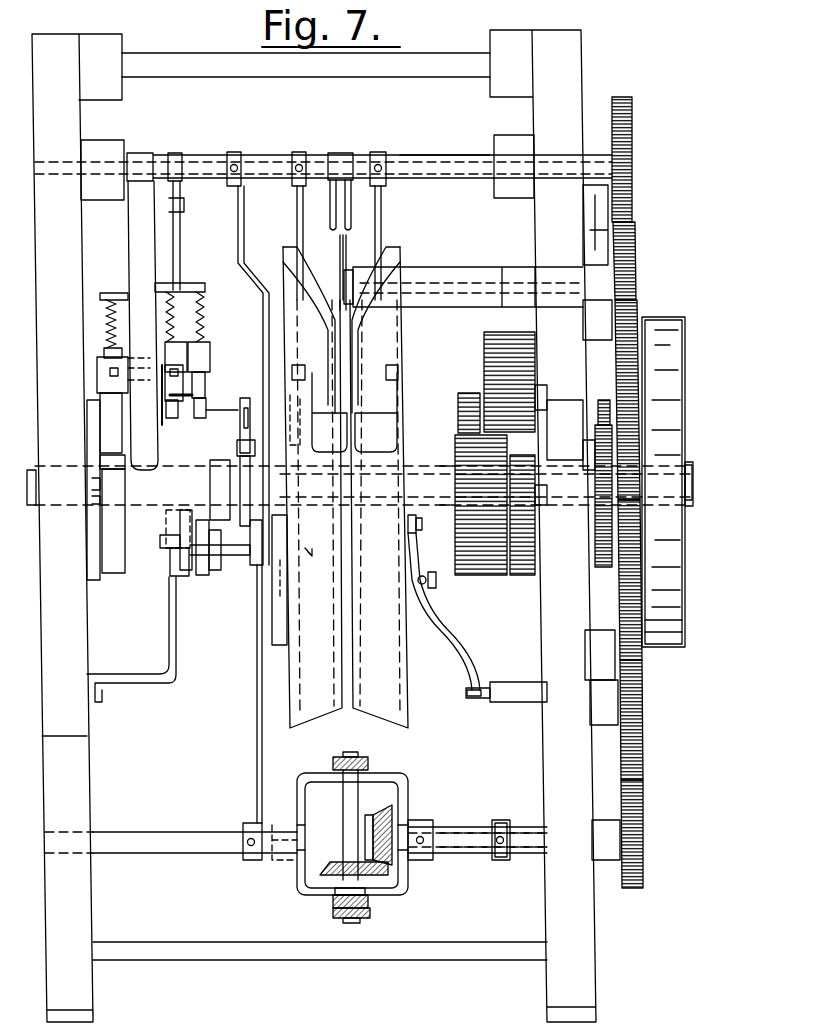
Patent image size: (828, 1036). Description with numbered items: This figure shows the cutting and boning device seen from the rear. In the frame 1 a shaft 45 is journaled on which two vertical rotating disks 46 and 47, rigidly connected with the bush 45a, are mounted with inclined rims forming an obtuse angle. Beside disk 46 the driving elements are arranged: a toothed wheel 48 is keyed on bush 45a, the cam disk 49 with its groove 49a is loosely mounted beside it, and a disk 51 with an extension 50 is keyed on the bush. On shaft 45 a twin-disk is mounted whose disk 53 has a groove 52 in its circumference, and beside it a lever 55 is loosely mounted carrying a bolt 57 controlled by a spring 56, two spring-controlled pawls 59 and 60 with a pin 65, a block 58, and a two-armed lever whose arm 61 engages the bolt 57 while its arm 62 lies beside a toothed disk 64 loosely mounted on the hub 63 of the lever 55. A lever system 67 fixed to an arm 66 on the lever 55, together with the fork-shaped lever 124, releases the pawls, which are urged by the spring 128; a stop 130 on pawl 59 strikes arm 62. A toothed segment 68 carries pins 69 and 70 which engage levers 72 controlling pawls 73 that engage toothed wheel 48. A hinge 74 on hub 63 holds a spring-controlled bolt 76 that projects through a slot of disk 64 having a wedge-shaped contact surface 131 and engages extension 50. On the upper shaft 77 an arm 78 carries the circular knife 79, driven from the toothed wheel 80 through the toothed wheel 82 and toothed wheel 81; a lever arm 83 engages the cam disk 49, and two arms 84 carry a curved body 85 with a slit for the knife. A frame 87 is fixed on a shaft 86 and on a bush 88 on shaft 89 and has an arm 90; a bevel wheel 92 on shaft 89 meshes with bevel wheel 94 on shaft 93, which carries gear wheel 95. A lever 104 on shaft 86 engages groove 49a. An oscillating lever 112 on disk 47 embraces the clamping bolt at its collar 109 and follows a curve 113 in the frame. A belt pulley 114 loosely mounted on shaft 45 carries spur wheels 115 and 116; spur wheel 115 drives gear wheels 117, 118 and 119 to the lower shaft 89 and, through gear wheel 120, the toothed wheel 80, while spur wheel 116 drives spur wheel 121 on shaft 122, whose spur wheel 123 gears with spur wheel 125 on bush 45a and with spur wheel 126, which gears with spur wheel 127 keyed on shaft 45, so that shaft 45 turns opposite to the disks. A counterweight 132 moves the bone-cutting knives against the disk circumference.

The frame 1 is at (40, 242).
The shaft 45 is at (32, 474).
The bush 45a is at (436, 456).
The rotating disk 46 is at (296, 672).
The rotating disk 47 is at (406, 672).
The toothed wheel 48 is at (305, 548).
The cam disk 49 is at (272, 612).
The groove 49a is at (280, 598).
The extension 50 is at (232, 556).
The disk 51 is at (248, 566).
The groove 52 is at (100, 459).
The disk 53 is at (106, 573).
The lever 55 is at (130, 258).
The spring 56 is at (103, 318).
The bolt 57 is at (104, 395).
The block 58 is at (210, 354).
The pawl 59 is at (172, 420).
The pawl 60 is at (205, 384).
The arm of two-armed lever 61 is at (100, 372).
The arm of two-armed lever 62 is at (165, 386).
The hub 63 is at (213, 460).
The toothed disk 64 is at (172, 575).
The pin 65 is at (192, 396).
The arm 66 is at (264, 162).
The lever system 67 is at (180, 232).
The toothed segment 68 is at (200, 575).
The pin 69 is at (208, 426).
The pin 70 is at (221, 560).
The lever 72 is at (247, 405).
The pawl 73 is at (296, 410).
The hinge 74 is at (188, 548).
The bolt 76 is at (165, 544).
The upper shaft 77 is at (441, 166).
The arm 78 is at (464, 274).
The circular knife 79 is at (346, 250).
The toothed wheel 80 is at (634, 132).
The toothed wheel 81 is at (636, 266).
The toothed wheel 82 is at (634, 204).
The lever arm 83 is at (243, 235).
The arms 84 is at (299, 244).
The curved body 85 is at (394, 392).
The shaft 86 is at (165, 842).
The frame 87 is at (300, 780).
The bush 88 is at (456, 832).
The lower shaft 89 is at (478, 854).
The arm 90 is at (333, 902).
The bevel wheel 92 is at (380, 815).
The shaft 93 is at (350, 800).
The bevel wheel 94 is at (328, 866).
The gear wheel 95 is at (372, 913).
The lever 104 is at (256, 733).
The collar 109 is at (418, 520).
The oscillating lever 112 is at (436, 622).
The curve 113 is at (508, 676).
The belt pulley 114 is at (658, 322).
The spur wheel 115 is at (634, 424).
The spur wheel 116 is at (596, 524).
The gear wheel 117 is at (620, 600).
The gear wheel 118 is at (636, 702).
The gear wheel 119 is at (643, 818).
The gear wheel 120 is at (638, 362).
The spur wheel 121 is at (596, 558).
The shaft 122 is at (566, 458).
The spur wheel 123 is at (462, 540).
The fork-shaped lever 124 is at (350, 196).
The spur wheel 125 is at (470, 404).
The spur wheel 126 is at (490, 346).
The spur wheel 127 is at (522, 576).
The spring 128 is at (175, 308).
The stop 130 is at (170, 405).
The wedge-shaped contact surface 131 is at (166, 524).
The counterweight 132 is at (510, 812).